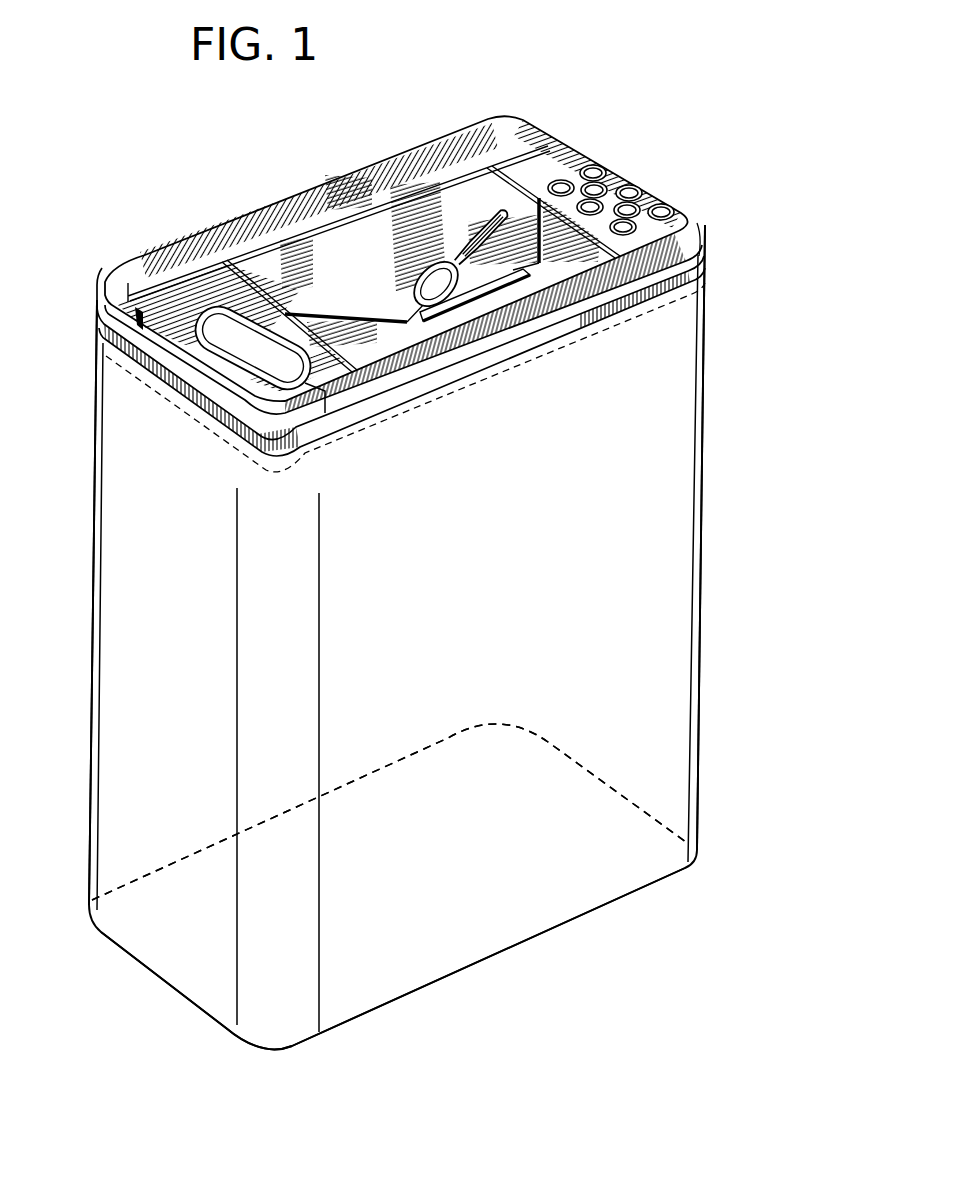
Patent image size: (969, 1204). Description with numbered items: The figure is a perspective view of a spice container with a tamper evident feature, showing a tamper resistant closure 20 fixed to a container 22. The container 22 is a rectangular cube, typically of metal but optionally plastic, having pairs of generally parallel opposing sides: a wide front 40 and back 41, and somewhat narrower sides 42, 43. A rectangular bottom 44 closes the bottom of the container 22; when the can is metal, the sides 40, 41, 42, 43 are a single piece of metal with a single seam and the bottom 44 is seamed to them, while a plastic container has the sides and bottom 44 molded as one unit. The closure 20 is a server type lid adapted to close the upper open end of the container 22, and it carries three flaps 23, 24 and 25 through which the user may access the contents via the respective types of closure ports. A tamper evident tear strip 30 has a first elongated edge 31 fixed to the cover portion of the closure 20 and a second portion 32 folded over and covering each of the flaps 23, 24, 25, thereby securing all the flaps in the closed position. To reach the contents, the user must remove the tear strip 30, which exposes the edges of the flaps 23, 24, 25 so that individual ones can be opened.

The tamper resistant closure 20 is at (672, 170).
The container 22 is at (712, 512).
The flap 23 is at (208, 287).
The flap 24 is at (337, 243).
The flap 25 is at (575, 157).
The tamper evident tear strip 30 is at (692, 225).
The first elongated edge 31 is at (700, 281).
The second portion 32 is at (632, 207).
The front 40 is at (480, 921).
The back 41 is at (128, 668).
The side 42 is at (188, 948).
The side 43 is at (658, 585).
The bottom 44 is at (380, 993).